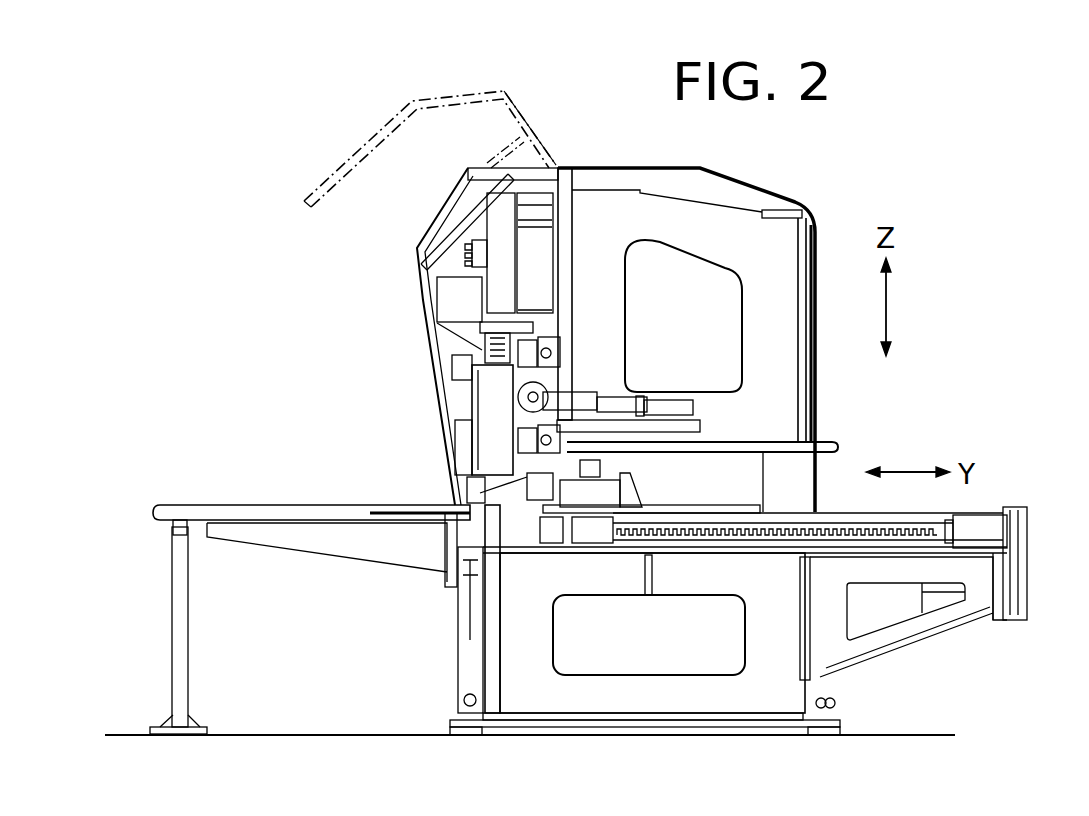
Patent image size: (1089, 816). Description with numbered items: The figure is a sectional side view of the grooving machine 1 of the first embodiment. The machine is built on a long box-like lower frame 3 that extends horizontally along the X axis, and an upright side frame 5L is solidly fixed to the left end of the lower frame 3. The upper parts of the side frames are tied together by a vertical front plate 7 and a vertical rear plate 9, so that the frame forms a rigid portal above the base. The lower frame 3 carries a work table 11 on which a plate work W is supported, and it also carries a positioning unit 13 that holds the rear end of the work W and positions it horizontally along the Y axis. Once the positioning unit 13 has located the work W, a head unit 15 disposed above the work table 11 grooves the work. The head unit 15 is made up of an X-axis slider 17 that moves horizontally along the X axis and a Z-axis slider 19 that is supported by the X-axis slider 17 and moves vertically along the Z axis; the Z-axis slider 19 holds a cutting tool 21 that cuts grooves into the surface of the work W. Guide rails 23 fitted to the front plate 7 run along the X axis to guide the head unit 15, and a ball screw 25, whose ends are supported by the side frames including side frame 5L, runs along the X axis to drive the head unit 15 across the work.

The grooving machine 1 is at (768, 187).
The lower frame 3 is at (696, 698).
The side frame 5L is at (800, 491).
The front plate 7 is at (566, 233).
The rear plate 9 is at (808, 345).
The work table 11 is at (447, 533).
The positioning unit 13 is at (668, 490).
The head unit 15 is at (462, 410).
The X-axis slider 17 is at (442, 388).
The Z-axis slider 19 is at (482, 437).
The cutting tool 21 is at (480, 492).
The guide rails 23 is at (552, 346).
The ball screw 25 is at (544, 396).
The work W is at (303, 500).